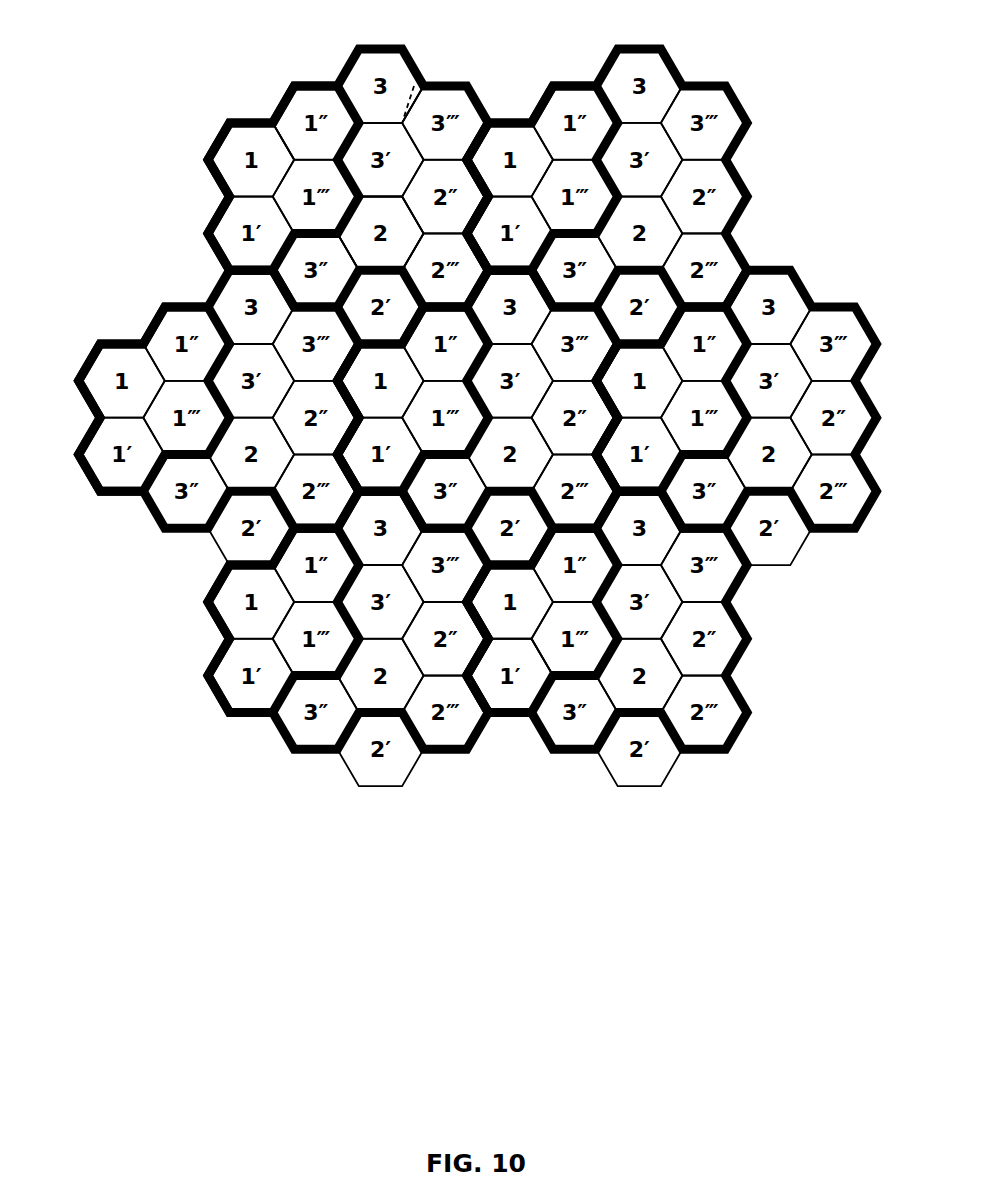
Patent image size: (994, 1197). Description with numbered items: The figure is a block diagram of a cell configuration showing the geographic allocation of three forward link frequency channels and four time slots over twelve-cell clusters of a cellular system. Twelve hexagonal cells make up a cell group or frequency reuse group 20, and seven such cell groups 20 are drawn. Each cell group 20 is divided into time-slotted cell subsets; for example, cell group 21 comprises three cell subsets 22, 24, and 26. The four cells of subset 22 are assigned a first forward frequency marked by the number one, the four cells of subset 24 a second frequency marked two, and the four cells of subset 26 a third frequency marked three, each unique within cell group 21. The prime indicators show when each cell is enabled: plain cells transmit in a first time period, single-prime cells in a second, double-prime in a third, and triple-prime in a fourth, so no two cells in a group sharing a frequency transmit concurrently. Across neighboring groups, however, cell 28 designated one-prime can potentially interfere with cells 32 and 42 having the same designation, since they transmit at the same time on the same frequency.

The cell group 20 is at (662, 48).
The cell group 21 is at (403, 48).
The cell subset 22 is at (293, 161).
The cell subset 24 is at (423, 233).
The cell subset 26 is at (418, 76).
The cell 28 is at (237, 693).
The cell 32 is at (107, 463).
The cell 42 is at (510, 697).